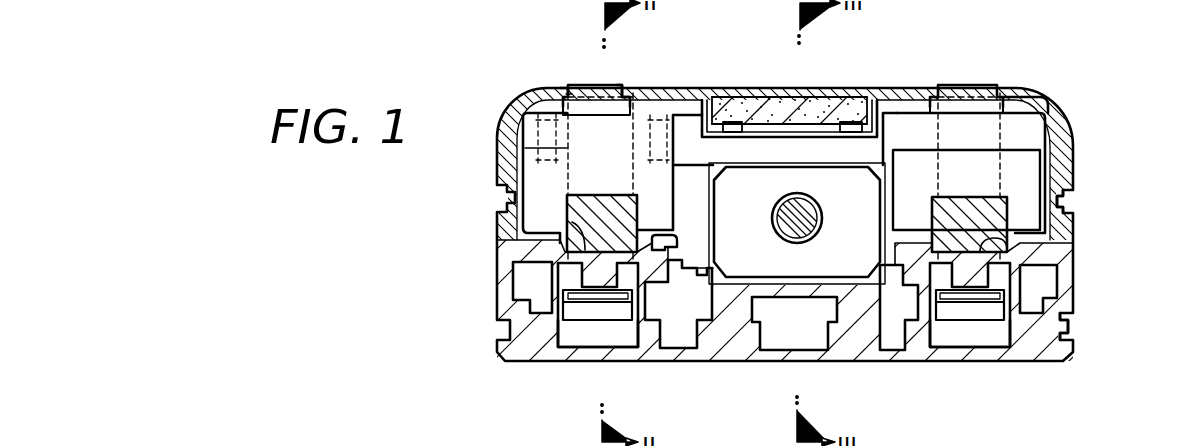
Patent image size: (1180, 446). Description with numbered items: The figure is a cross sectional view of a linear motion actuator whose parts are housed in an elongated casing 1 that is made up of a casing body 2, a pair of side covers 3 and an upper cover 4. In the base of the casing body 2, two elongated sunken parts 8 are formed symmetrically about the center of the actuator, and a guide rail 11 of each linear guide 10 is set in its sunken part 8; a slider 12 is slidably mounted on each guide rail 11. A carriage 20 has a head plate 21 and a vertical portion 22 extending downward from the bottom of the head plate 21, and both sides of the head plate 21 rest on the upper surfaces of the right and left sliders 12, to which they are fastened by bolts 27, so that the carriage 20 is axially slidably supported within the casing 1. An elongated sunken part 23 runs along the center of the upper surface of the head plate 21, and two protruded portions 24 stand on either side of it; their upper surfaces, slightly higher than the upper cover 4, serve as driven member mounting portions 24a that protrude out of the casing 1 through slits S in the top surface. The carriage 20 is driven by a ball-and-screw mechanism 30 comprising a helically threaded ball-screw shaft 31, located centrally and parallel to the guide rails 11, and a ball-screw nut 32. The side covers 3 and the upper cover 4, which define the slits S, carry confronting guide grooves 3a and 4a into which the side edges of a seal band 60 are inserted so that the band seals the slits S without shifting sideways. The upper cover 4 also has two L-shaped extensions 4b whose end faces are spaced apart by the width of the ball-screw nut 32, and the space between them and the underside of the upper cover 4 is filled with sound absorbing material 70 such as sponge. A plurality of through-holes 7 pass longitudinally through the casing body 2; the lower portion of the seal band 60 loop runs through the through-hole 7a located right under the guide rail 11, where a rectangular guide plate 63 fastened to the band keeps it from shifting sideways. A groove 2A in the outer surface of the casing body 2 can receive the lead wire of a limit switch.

The casing 1 is at (1075, 310).
The casing body 2 is at (527, 353).
The groove 2A is at (1067, 327).
The side cover 3 is at (500, 145).
The guide groove 3a is at (567, 86).
The upper cover 4 is at (720, 97).
The guide groove 4a is at (640, 100).
The L-shaped extension 4b is at (748, 110).
The through-hole 7 is at (525, 287).
The through-hole 7a is at (617, 340).
The sunken part 8 is at (560, 212).
The linear guide 10 is at (1125, 147).
The guide rail 11 is at (1000, 210).
The slider 12 is at (1020, 170).
The carriage 20 is at (1033, 53).
The head plate 21 is at (1022, 127).
The vertical portion 22 is at (900, 170).
The sunken part 23 is at (808, 140).
The protruded portion 24 is at (587, 84).
The driven member mounting portion 24a is at (617, 87).
The bolt 27 is at (543, 102).
The ball-and-screw mechanism 30 is at (920, 53).
The ball-screw shaft 31 is at (862, 178).
The ball-screw nut 32 is at (813, 215).
The seal band 60 is at (625, 98).
The guide plate 63 is at (580, 312).
The sound absorbing material 70 is at (780, 100).
The slit S is at (571, 78).